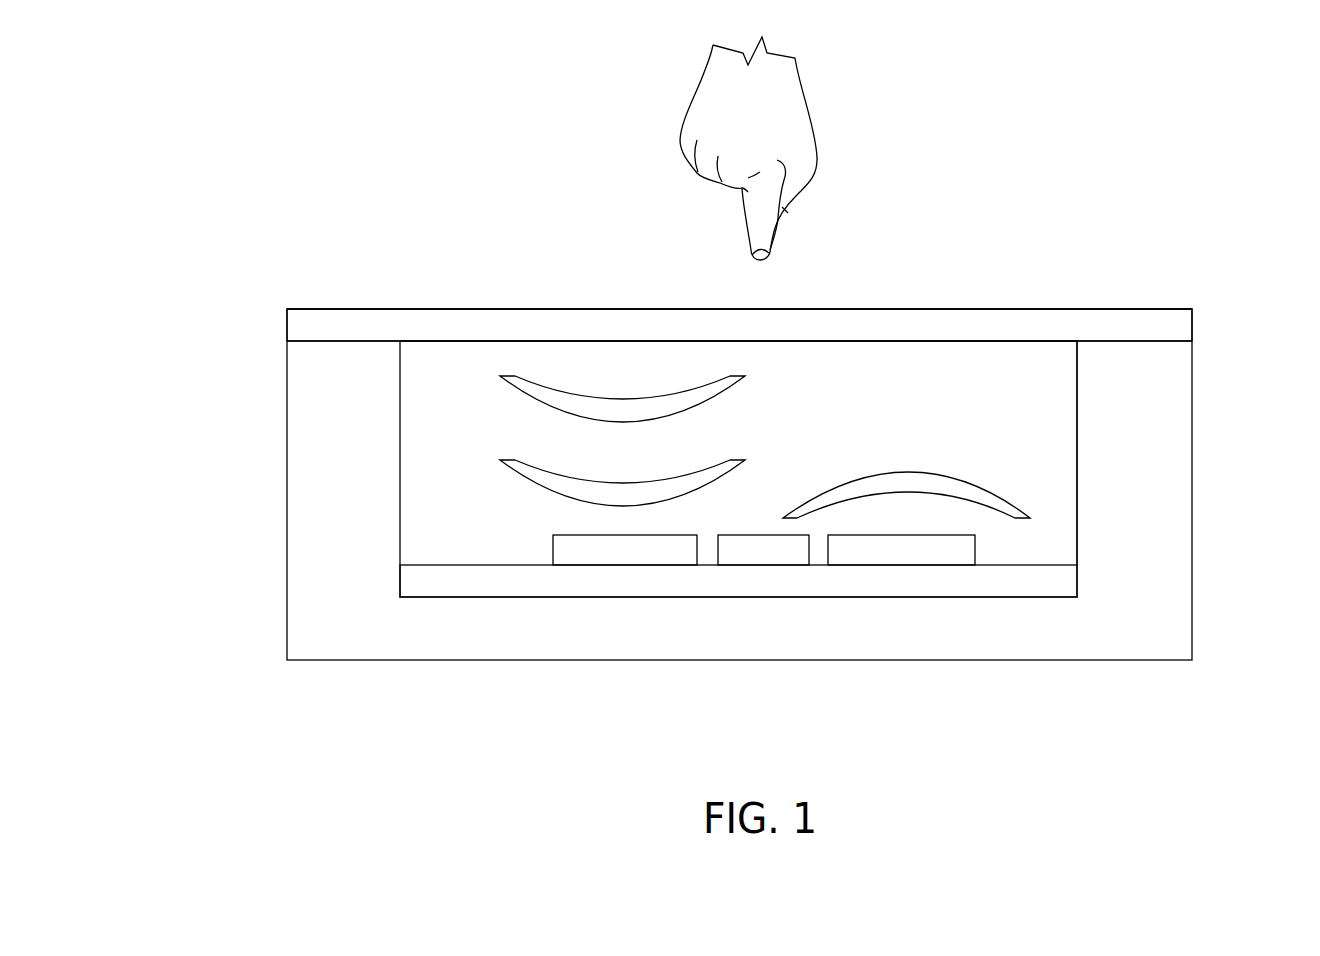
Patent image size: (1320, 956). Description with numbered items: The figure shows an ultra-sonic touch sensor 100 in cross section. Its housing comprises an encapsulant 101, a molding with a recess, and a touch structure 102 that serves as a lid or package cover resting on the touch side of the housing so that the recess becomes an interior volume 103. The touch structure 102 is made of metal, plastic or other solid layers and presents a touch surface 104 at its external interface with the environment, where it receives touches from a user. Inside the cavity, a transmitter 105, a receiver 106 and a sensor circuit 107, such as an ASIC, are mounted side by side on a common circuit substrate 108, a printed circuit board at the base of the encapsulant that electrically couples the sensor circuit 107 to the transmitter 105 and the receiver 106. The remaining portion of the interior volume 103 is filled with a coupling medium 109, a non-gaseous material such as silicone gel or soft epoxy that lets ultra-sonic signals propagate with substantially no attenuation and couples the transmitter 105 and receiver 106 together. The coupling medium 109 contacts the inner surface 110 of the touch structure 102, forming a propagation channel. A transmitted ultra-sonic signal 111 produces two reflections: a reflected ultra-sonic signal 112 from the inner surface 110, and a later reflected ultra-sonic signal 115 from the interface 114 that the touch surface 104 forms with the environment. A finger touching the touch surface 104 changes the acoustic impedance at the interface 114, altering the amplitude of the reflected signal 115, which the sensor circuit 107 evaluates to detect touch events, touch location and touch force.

The ultra-sonic touch sensor 100 is at (203, 113).
The encapsulant 101 is at (367, 468).
The touch structure 102 is at (1192, 325).
The interior volume 103 is at (447, 408).
The touch surface 104 is at (1015, 309).
The transmitter 105 is at (899, 565).
The receiver 106 is at (622, 565).
The sensor circuit 107 is at (756, 565).
The common circuit substrate 108 is at (1023, 580).
The coupling medium 109 is at (1035, 463).
The inner surface 110 is at (457, 341).
The transmitted ultra-sonic signal 111 is at (932, 471).
The reflected ultra-sonic signal 112 is at (510, 490).
The interface 114 is at (930, 308).
The reflected ultra-sonic signal 115 is at (500, 383).